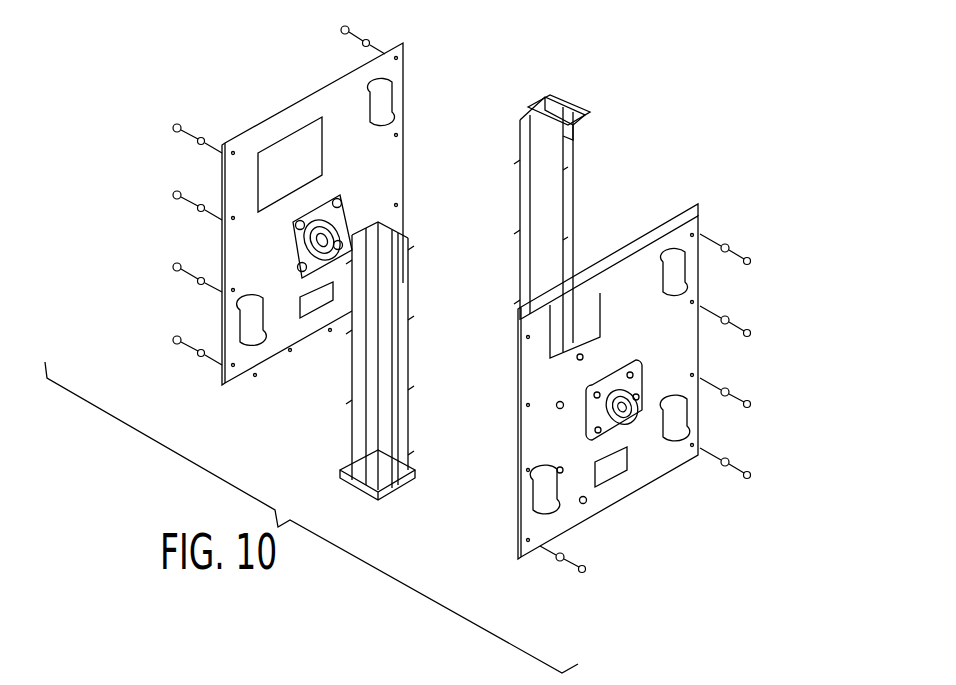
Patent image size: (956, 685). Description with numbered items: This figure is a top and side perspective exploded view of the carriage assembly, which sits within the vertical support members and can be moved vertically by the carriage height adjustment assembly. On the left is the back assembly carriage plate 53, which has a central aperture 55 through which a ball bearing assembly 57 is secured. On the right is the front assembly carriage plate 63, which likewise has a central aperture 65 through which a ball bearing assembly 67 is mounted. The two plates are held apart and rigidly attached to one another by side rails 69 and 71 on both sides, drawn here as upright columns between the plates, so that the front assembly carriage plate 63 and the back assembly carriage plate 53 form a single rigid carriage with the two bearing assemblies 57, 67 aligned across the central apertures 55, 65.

The back assembly carriage plate 53 is at (468, 57).
The central aperture 55 is at (328, 218).
The ball bearing assembly 57 is at (303, 250).
The front assembly carriage plate 63 is at (698, 282).
The central aperture 65 is at (760, 358).
The ball bearing assembly 67 is at (710, 537).
The side rail 69 is at (360, 412).
The side rail 71 is at (573, 207).